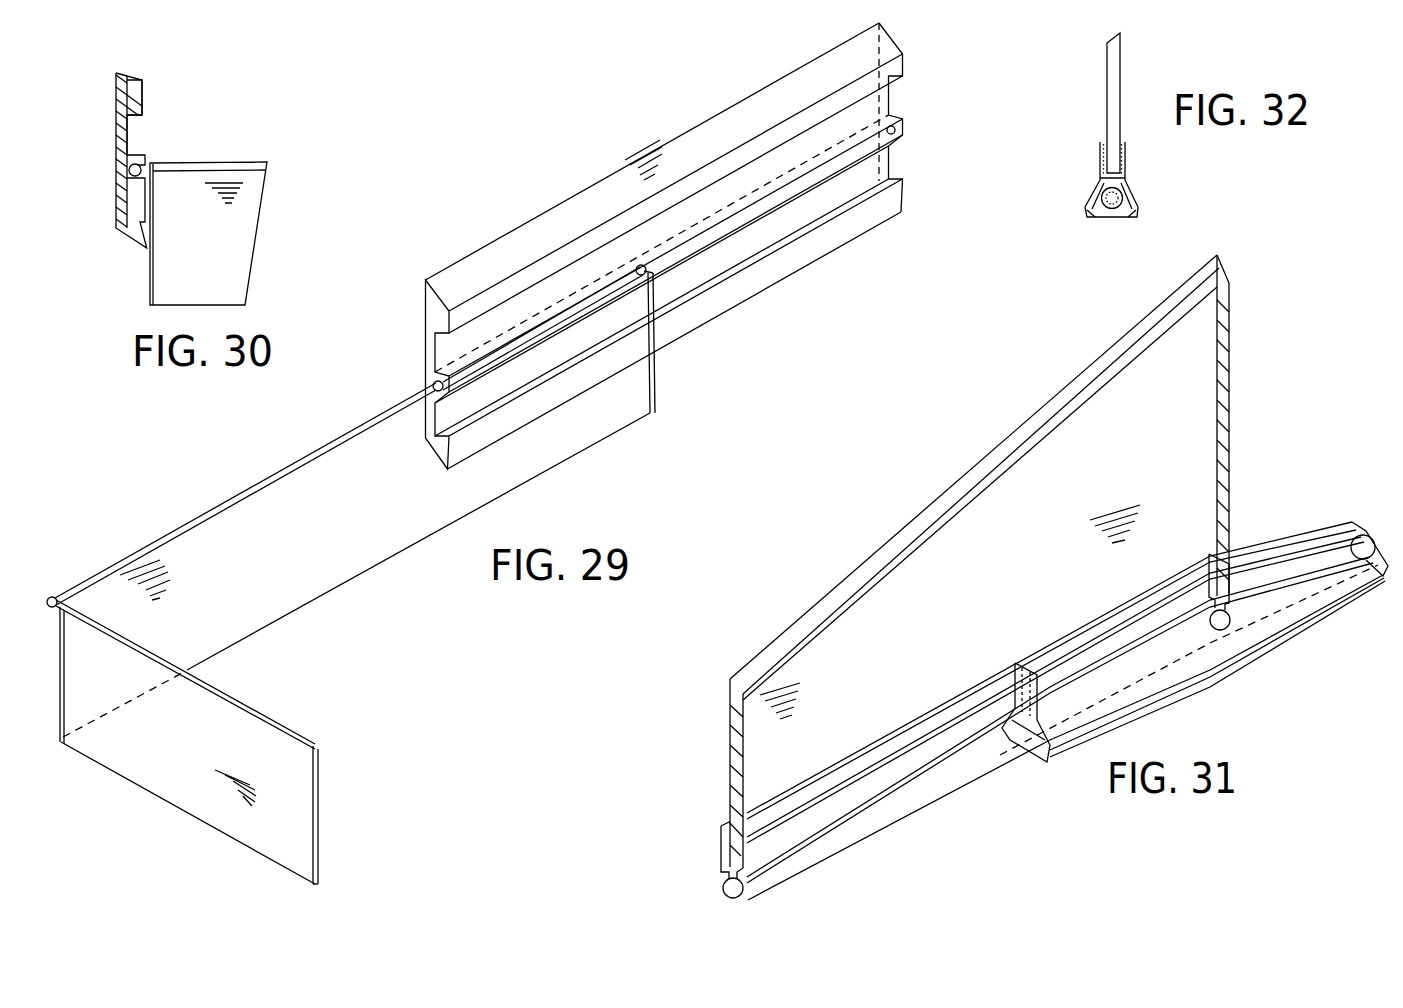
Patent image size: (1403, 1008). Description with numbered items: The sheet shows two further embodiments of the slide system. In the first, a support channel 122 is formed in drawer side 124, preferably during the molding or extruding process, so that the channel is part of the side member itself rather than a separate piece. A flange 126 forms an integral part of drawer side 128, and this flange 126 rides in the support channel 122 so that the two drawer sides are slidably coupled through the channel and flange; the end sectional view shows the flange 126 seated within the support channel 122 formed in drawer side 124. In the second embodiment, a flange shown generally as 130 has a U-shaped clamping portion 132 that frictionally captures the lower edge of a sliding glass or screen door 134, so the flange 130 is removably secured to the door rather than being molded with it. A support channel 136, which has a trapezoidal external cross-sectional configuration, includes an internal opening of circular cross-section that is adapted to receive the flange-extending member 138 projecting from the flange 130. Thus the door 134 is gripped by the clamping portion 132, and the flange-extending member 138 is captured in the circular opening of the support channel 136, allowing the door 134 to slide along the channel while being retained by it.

In FIG. 30, the support channel 122 is at (126, 176).
In FIG. 30, the drawer side 124 is at (123, 98).
In FIG. 30, the flange 126 is at (140, 165).
In FIG. 30, the drawer side 128 is at (154, 263).
In FIG. 32, the flange 130 is at (1127, 212).
In FIG. 32, the U-shaped clamping portion 132 is at (1101, 167).
In FIG. 32, the sliding glass or screen door 134 is at (1107, 96).
In FIG. 32, the support channel 136 is at (1107, 220).
In FIG. 32, the flange-extending member 138 is at (1101, 201).